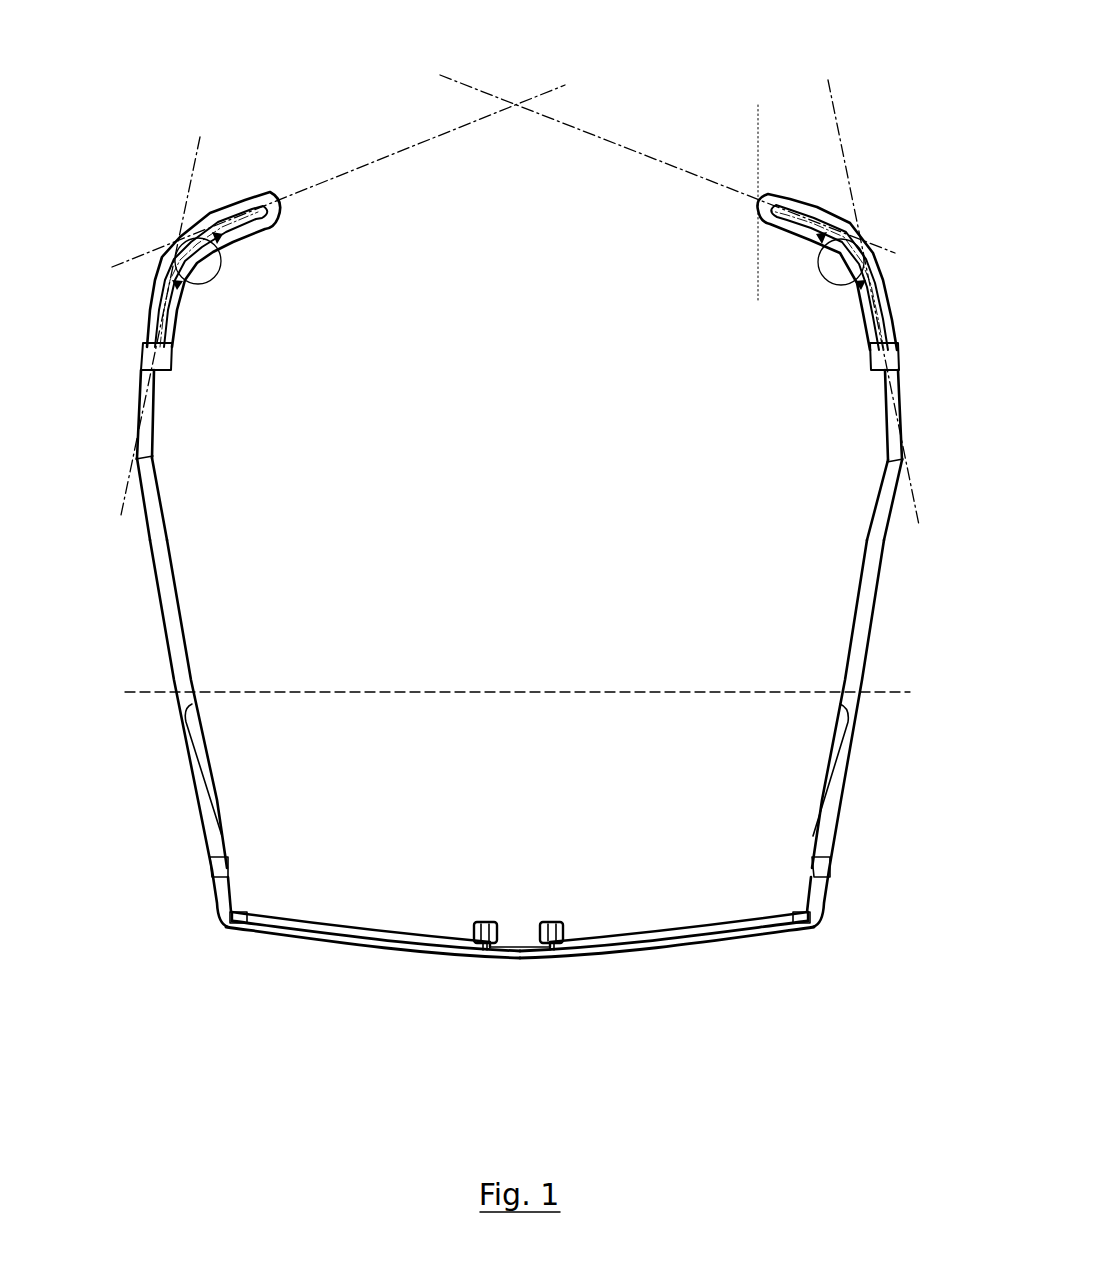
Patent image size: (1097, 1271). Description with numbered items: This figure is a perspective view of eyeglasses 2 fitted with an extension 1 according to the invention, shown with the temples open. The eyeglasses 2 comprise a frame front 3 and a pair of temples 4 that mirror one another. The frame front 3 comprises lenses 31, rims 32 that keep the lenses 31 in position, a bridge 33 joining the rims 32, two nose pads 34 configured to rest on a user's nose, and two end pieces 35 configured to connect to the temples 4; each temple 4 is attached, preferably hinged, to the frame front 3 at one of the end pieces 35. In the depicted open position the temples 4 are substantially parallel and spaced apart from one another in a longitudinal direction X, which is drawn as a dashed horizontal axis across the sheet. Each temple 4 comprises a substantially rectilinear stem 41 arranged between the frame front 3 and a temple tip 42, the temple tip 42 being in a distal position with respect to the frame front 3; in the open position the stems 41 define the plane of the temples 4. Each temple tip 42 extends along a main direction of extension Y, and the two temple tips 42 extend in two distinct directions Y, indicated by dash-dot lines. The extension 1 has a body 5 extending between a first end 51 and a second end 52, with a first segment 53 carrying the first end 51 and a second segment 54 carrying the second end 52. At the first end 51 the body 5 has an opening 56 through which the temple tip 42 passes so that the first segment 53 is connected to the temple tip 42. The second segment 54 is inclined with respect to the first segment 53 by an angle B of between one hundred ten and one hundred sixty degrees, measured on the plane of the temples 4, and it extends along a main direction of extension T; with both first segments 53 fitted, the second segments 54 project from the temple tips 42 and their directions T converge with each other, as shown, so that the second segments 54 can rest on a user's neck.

The extension for eyeglasses 1 is at (148, 170).
The eyeglasses 2 is at (532, 834).
The frame front 3 is at (648, 954).
The lens 31 is at (385, 933).
The rim 32 is at (327, 946).
The bridge 33 is at (508, 962).
The nose pad 34 is at (488, 920).
The end piece 35 is at (222, 919).
The temple 4 is at (183, 617).
The stem 41 is at (165, 522).
The temple tip 42 is at (153, 397).
The body 5 is at (152, 296).
The first end 51 is at (146, 364).
The second end 52 is at (283, 213).
The first segment 53 is at (163, 351).
The second segment 54 is at (242, 234).
The opening 56 is at (140, 399).
The angle B is at (200, 287).
The main direction of extension of the second segment T is at (383, 158).
The longitudinal direction X is at (578, 692).
The main direction of extension of the temple tip Y is at (200, 140).